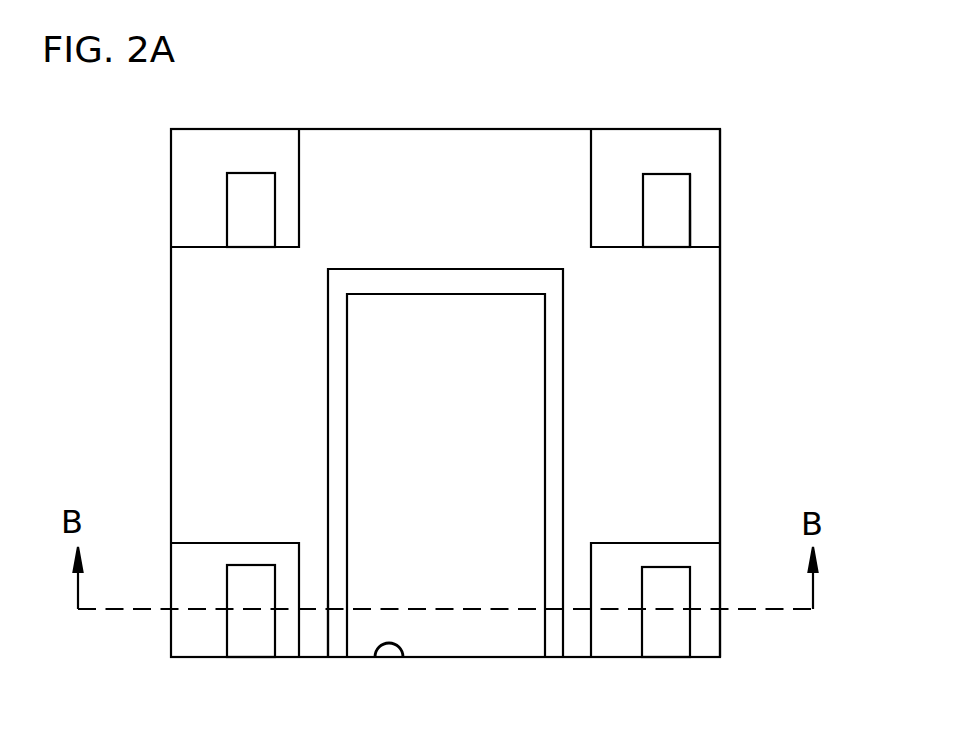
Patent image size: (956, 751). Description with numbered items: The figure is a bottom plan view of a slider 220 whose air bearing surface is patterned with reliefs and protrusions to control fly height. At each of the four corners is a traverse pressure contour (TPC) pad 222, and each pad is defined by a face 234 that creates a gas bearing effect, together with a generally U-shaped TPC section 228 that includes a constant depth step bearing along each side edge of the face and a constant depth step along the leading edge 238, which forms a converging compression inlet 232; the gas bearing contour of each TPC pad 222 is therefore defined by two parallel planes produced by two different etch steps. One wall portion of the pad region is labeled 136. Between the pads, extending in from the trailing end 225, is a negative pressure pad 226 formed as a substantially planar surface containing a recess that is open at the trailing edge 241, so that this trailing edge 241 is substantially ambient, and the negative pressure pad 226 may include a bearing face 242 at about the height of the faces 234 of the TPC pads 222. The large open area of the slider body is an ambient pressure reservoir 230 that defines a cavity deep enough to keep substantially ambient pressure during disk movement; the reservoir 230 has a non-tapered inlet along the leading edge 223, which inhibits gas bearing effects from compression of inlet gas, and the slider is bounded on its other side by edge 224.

The stent delivery tip / device body 220 is at (62, 355).
The traverse pressure contour (TPC) pad 222 is at (170, 193).
The leading edge 223 is at (498, 128).
The right side edge 224 is at (721, 337).
The trailing end 225 is at (519, 658).
The negative pressure pad 226 is at (327, 250).
The U-shaped TPC section 228 is at (713, 203).
The ambient pressure reservoir 230 is at (193, 429).
The converging compression inlet 232 is at (671, 143).
The face 234 is at (687, 235).
The leading edge 238 is at (667, 175).
The recess wall portion 136 is at (690, 215).
The trailing edge 241 is at (403, 658).
The bearing face 242 is at (338, 645).